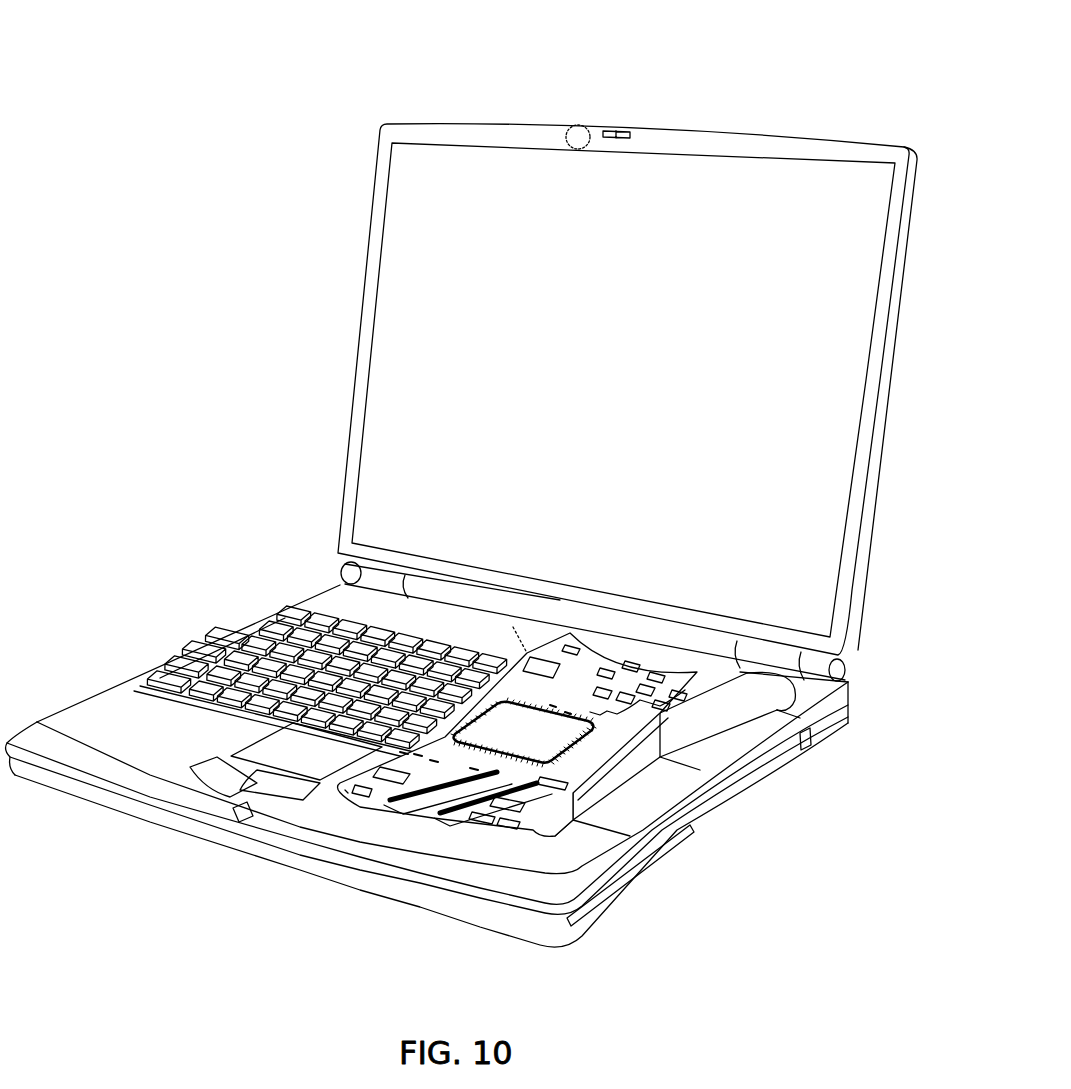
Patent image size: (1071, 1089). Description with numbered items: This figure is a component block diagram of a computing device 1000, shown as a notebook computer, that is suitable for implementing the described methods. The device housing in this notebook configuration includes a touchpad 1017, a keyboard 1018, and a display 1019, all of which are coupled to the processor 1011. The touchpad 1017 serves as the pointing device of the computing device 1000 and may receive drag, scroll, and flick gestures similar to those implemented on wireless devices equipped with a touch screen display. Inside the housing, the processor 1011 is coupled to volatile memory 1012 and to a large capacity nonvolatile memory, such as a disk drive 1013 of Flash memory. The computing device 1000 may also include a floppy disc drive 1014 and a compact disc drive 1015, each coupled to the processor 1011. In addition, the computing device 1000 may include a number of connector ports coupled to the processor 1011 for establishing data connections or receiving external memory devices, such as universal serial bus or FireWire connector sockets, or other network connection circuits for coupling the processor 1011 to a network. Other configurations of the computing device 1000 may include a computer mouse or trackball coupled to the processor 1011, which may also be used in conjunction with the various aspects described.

The computing device 1000 is at (463, 483).
The processor 1011 is at (540, 742).
The volatile memory 1012 is at (445, 790).
The disk drive 1013 is at (578, 835).
The floppy disc drive 1014 is at (660, 780).
The compact disc (CD) drive 1015 is at (735, 722).
The touchpad 1017 is at (263, 753).
The keyboard 1018 is at (213, 658).
The display 1019 is at (838, 587).